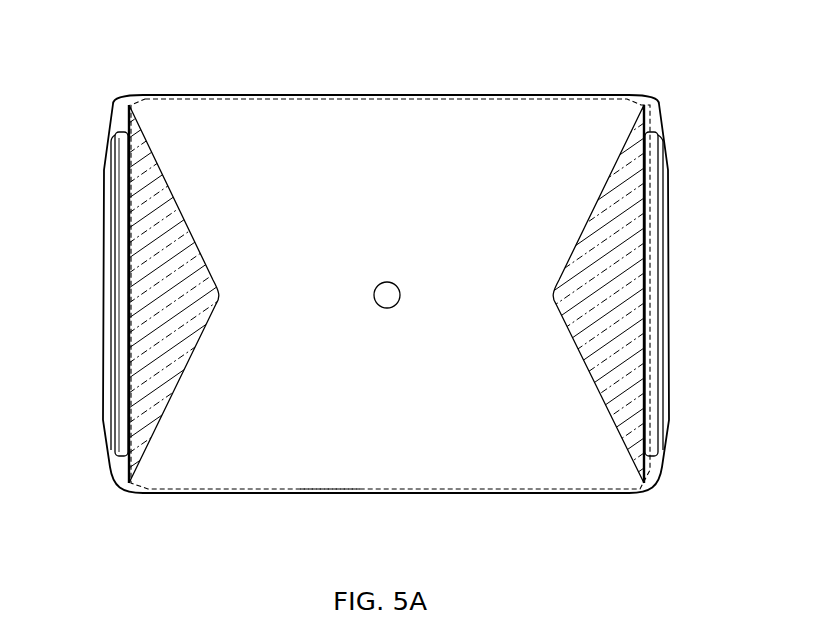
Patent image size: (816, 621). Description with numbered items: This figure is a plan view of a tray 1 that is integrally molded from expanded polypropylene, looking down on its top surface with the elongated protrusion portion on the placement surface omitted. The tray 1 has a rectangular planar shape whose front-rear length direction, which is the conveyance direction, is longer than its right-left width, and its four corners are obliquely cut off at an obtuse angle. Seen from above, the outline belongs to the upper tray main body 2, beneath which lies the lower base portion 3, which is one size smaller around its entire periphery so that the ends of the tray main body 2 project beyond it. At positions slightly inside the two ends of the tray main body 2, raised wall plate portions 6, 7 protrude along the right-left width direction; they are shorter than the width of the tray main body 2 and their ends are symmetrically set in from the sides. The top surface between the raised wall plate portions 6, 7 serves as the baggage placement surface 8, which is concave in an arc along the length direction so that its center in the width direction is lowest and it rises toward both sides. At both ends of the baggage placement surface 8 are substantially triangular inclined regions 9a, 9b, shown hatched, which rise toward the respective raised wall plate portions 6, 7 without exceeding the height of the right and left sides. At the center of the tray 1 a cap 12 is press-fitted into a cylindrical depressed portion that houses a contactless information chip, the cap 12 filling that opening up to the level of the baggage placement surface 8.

The tray 1 is at (267, 86).
The tray main body 2 is at (403, 497).
The lower base portion 3 is at (329, 496).
The raised wall plate portion 6 is at (120, 277).
The raised wall plate portion 7 is at (653, 298).
The baggage placement surface 8 is at (486, 241).
The inclined region 9a is at (196, 308).
The inclined region 9b is at (580, 303).
The cap 12 is at (387, 290).